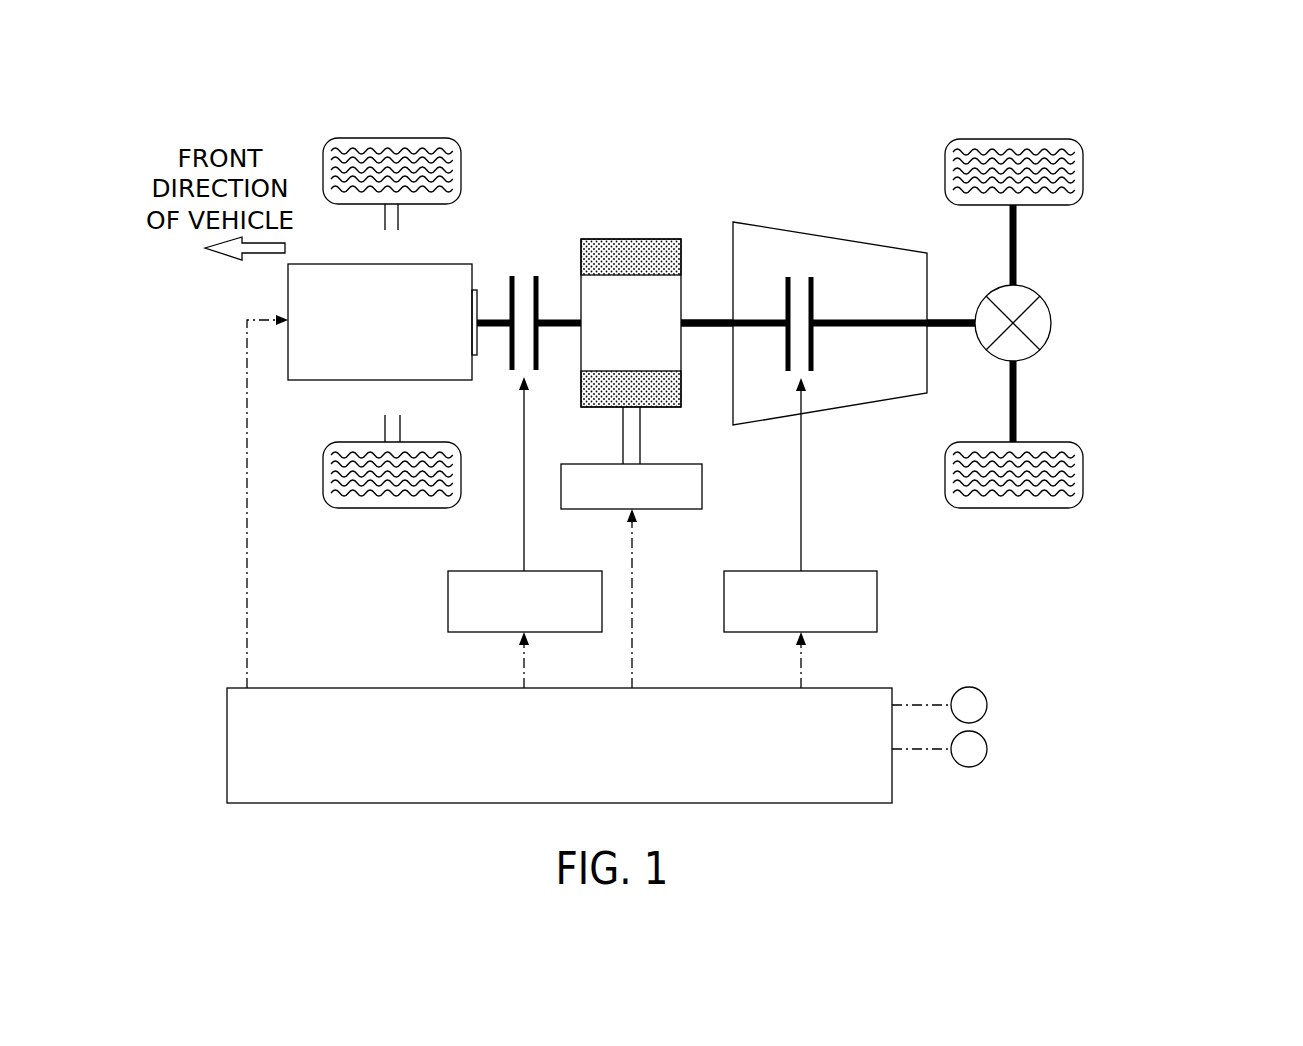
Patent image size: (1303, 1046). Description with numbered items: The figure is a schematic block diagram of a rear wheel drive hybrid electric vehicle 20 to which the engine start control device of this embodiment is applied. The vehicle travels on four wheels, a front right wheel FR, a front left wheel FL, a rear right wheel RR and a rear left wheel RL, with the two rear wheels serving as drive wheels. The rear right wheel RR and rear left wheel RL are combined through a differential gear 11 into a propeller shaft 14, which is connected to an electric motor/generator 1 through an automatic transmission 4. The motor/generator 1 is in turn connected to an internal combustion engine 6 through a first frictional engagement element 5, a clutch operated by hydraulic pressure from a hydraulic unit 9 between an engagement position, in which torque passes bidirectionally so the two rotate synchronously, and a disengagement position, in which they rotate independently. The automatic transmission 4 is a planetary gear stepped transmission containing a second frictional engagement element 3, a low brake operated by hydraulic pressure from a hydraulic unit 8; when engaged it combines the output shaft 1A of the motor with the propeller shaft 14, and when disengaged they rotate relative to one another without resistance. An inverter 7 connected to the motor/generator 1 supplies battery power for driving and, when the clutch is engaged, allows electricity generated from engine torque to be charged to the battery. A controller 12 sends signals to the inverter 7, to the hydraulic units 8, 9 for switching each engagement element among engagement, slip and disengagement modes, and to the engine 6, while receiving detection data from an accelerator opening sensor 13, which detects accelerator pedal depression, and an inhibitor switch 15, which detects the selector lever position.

The electric motor/generator 1 is at (649, 239).
The output shaft 1A is at (706, 320).
The second frictional engagement element 3 is at (815, 294).
The automatic transmission 4 is at (800, 232).
The first frictional engagement element 5 is at (540, 283).
The internal combustion engine 6 is at (466, 264).
The inverter 7 is at (680, 512).
The hydraulic unit 8 is at (841, 571).
The hydraulic unit 9 is at (486, 571).
The differential gear 11 is at (1052, 322).
The controller 12 is at (382, 688).
The accelerator opening sensor 13 is at (987, 702).
The propeller shaft 14 is at (953, 318).
The inhibitor switch 15 is at (987, 754).
The hybrid electric vehicle 20 is at (541, 114).
The front right wheel FR is at (357, 138).
The front left wheel FL is at (360, 508).
The rear right wheel RR is at (1049, 139).
The rear left wheel RL is at (1045, 508).